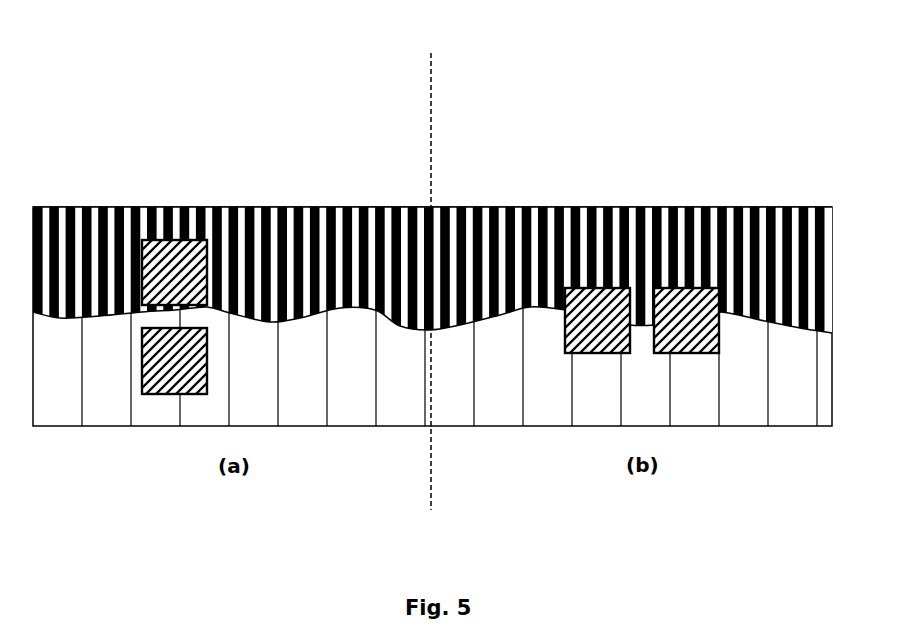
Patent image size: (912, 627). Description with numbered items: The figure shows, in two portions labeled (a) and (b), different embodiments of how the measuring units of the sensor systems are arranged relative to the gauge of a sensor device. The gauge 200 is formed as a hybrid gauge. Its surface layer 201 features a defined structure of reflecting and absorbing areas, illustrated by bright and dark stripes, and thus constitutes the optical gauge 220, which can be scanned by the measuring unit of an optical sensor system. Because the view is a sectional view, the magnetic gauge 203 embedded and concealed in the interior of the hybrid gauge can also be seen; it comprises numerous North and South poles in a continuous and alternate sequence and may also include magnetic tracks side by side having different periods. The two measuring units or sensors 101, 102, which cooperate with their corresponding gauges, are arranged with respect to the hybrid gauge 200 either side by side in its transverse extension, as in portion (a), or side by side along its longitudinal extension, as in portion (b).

The gauge 200 is at (180, 158).
The surface layer 201 is at (255, 217).
The optical gauge 220 is at (372, 242).
The magnetic gauge 203 is at (353, 375).
The measuring unit 101 is at (177, 273).
The measuring unit 102 is at (167, 372).